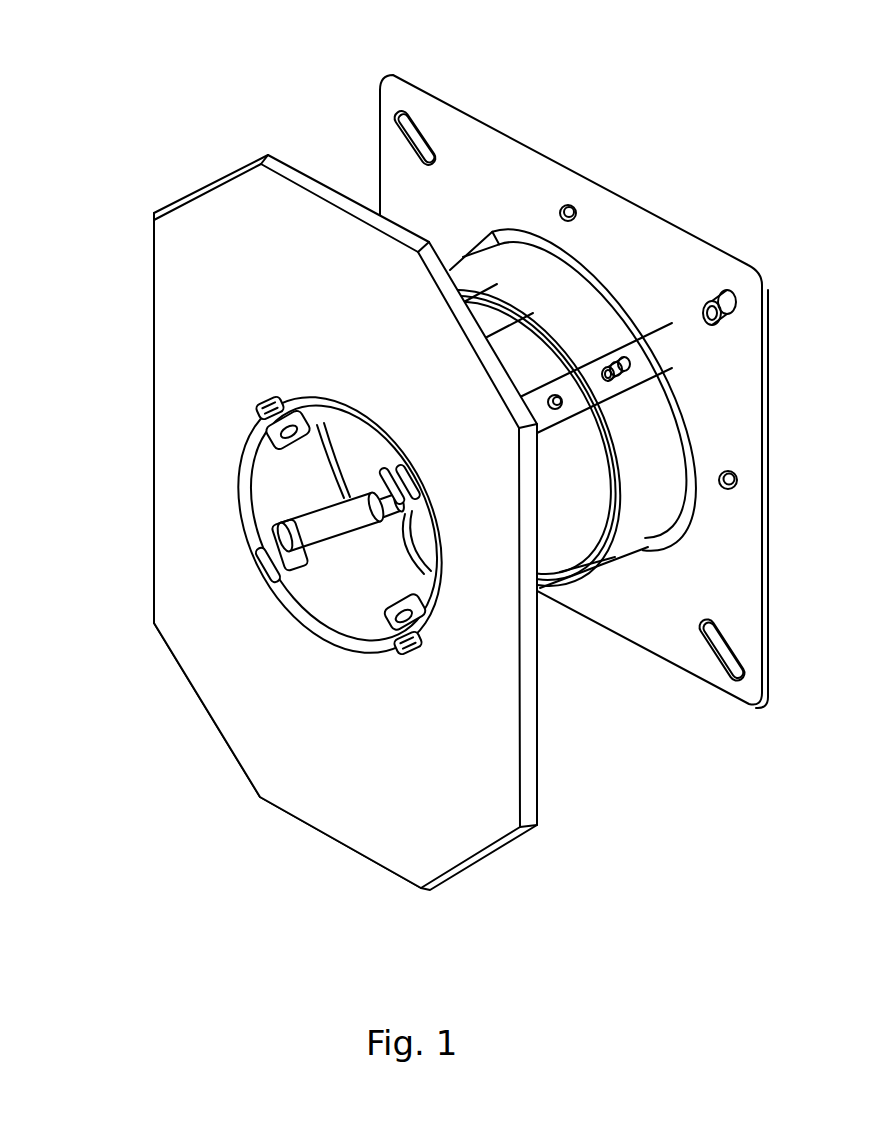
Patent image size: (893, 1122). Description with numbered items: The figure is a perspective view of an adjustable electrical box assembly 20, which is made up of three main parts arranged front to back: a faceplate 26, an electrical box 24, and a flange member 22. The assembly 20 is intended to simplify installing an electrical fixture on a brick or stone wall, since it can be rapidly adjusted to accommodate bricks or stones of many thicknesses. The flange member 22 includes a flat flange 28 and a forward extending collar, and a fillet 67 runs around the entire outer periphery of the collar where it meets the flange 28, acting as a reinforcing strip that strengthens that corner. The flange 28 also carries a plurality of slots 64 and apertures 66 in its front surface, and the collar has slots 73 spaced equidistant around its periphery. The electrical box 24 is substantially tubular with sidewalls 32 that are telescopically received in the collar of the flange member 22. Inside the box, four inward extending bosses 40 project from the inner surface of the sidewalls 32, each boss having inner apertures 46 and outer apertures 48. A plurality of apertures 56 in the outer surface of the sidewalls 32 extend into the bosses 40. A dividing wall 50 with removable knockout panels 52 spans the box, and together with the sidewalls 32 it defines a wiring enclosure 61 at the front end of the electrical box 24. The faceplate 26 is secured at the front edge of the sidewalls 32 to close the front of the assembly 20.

The adjustable electrical box assembly 20 is at (114, 102).
The flange member 22 is at (658, 215).
The electrical box 24 is at (570, 493).
The faceplate 26 is at (190, 386).
The flange 28 is at (660, 276).
The sidewalls 32 is at (308, 496).
The inward extending bosses 40 is at (330, 537).
The inner apertures 46 is at (288, 404).
The outer apertures 48 is at (268, 398).
The dividing wall 50 is at (368, 469).
The removable knockout panels 52 is at (425, 546).
The apertures 56 is at (557, 403).
The wiring enclosure 61 is at (368, 600).
The slots 64 is at (721, 308).
The apertures 66 is at (736, 488).
The fillet 67 is at (628, 308).
The slots 73 is at (620, 373).